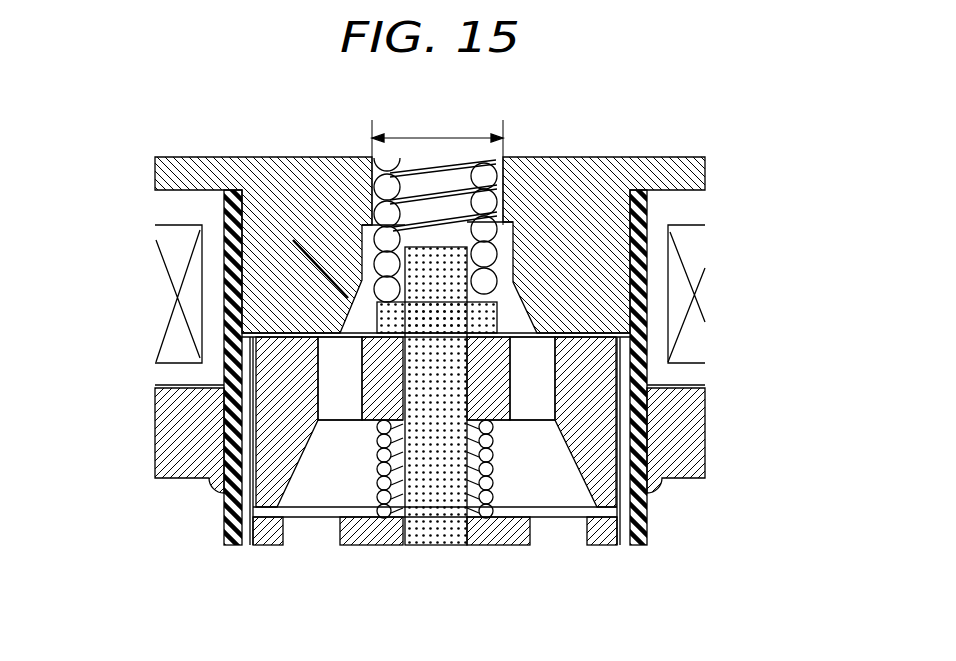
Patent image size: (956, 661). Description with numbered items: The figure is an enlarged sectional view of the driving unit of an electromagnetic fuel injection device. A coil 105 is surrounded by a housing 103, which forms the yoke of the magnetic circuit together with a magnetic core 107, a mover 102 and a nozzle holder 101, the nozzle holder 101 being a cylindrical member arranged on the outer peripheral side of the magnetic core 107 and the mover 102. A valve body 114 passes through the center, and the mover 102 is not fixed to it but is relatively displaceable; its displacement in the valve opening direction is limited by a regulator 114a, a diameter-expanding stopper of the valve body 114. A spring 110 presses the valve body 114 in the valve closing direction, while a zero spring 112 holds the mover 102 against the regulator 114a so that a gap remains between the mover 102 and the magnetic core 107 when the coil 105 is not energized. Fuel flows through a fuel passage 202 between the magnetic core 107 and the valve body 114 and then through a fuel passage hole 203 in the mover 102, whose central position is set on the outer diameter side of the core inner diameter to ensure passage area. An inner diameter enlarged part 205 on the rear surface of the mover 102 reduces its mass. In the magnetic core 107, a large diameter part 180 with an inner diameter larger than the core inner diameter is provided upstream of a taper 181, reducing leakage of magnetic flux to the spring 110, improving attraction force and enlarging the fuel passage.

The nozzle holder 101 is at (230, 518).
The mover 102 is at (317, 400).
The housing 103 is at (175, 435).
The coil 105 is at (175, 350).
The magnetic core 107 is at (597, 203).
The spring 110 is at (485, 202).
The zero spring 112 is at (490, 500).
The valve body 114 is at (428, 535).
The regulator 114a is at (480, 317).
The large diameter part 180 is at (360, 235).
The taper 181 is at (293, 240).
The fuel passage 202 is at (512, 315).
The fuel passage hole 203 is at (532, 367).
The inner diameter enlarged part 205 is at (578, 475).